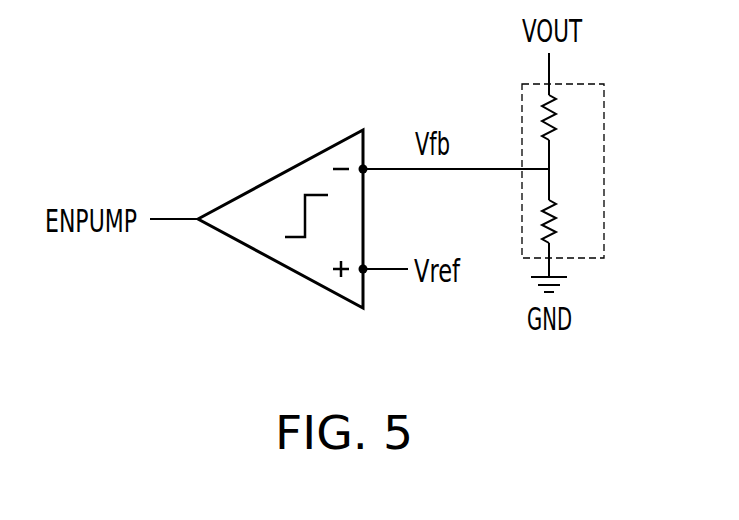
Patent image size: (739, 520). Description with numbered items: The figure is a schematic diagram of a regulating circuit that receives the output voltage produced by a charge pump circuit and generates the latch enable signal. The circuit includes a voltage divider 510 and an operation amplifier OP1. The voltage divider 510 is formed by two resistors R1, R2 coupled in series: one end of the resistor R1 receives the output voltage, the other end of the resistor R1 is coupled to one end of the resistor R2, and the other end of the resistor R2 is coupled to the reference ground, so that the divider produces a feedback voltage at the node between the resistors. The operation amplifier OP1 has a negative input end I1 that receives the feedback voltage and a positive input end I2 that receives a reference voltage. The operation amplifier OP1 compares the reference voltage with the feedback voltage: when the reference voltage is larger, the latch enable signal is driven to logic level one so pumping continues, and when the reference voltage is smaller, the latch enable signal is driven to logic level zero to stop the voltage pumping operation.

The operation amplifier OP1 is at (278, 176).
The negative input end I1 is at (366, 168).
The positive input end I2 is at (366, 271).
The resistor R1 is at (564, 118).
The resistor R2 is at (566, 221).
The voltage divider 510 is at (605, 161).